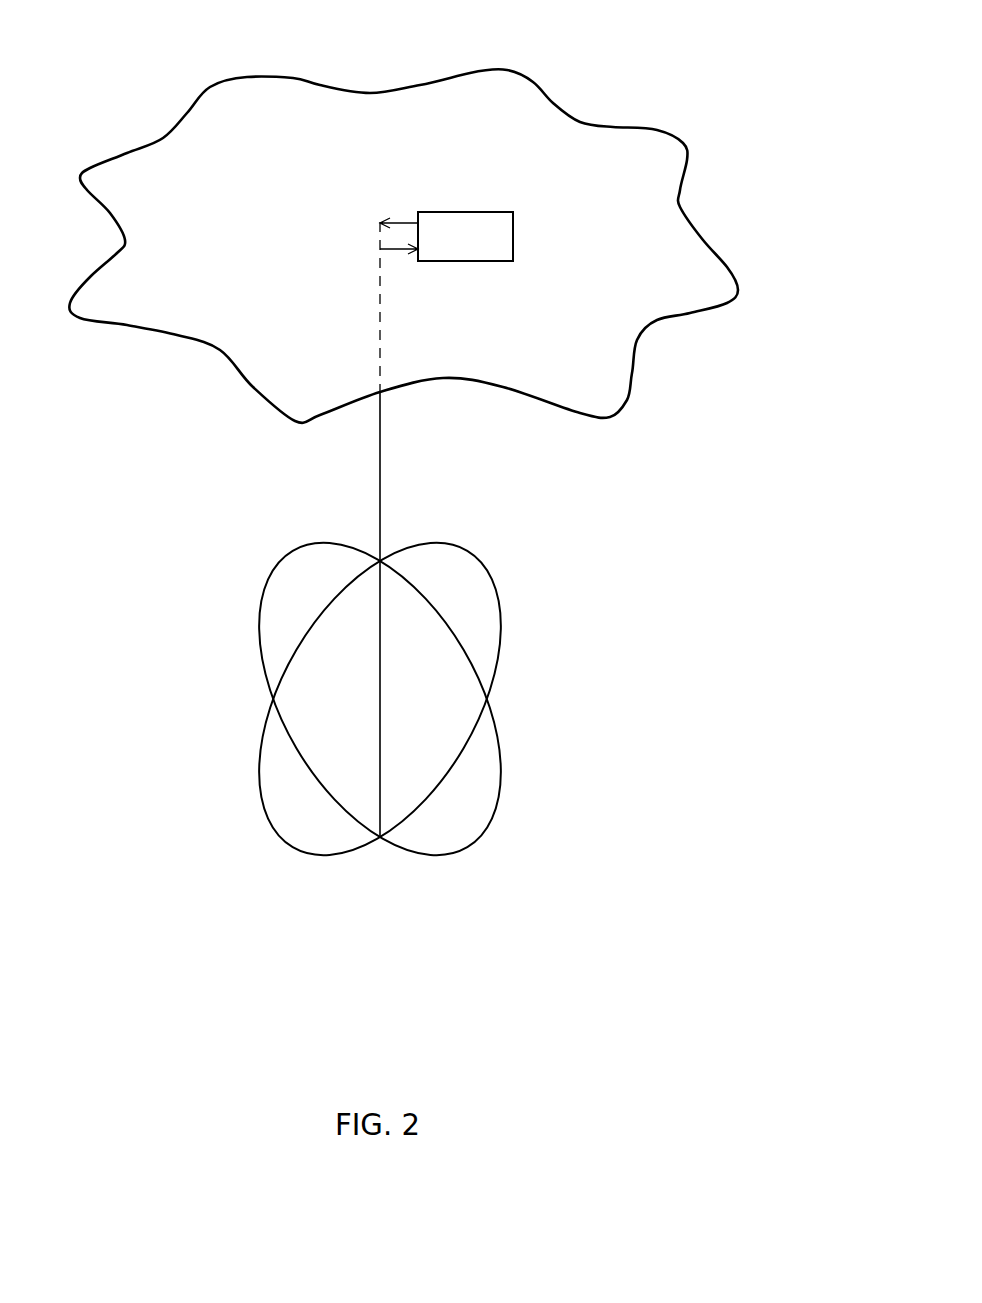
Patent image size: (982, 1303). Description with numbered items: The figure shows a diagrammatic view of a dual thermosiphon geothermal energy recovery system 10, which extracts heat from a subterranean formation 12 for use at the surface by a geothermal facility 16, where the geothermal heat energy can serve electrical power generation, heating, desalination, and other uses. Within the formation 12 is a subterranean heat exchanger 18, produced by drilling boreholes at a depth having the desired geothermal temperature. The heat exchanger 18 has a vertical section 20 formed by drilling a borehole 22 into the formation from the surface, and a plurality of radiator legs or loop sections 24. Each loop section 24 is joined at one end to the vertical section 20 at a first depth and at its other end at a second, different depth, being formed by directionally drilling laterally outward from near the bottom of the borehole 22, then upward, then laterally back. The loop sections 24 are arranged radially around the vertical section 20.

The dual thermosiphon geothermal energy recovery system 10 is at (63, 641).
The subterranean formation 12 is at (696, 758).
The geothermal facility 16 is at (513, 237).
The subterranean heat exchanger 18 is at (436, 699).
The vertical section 20 is at (380, 663).
The borehole 22 is at (380, 446).
The loop section 24 is at (262, 591).